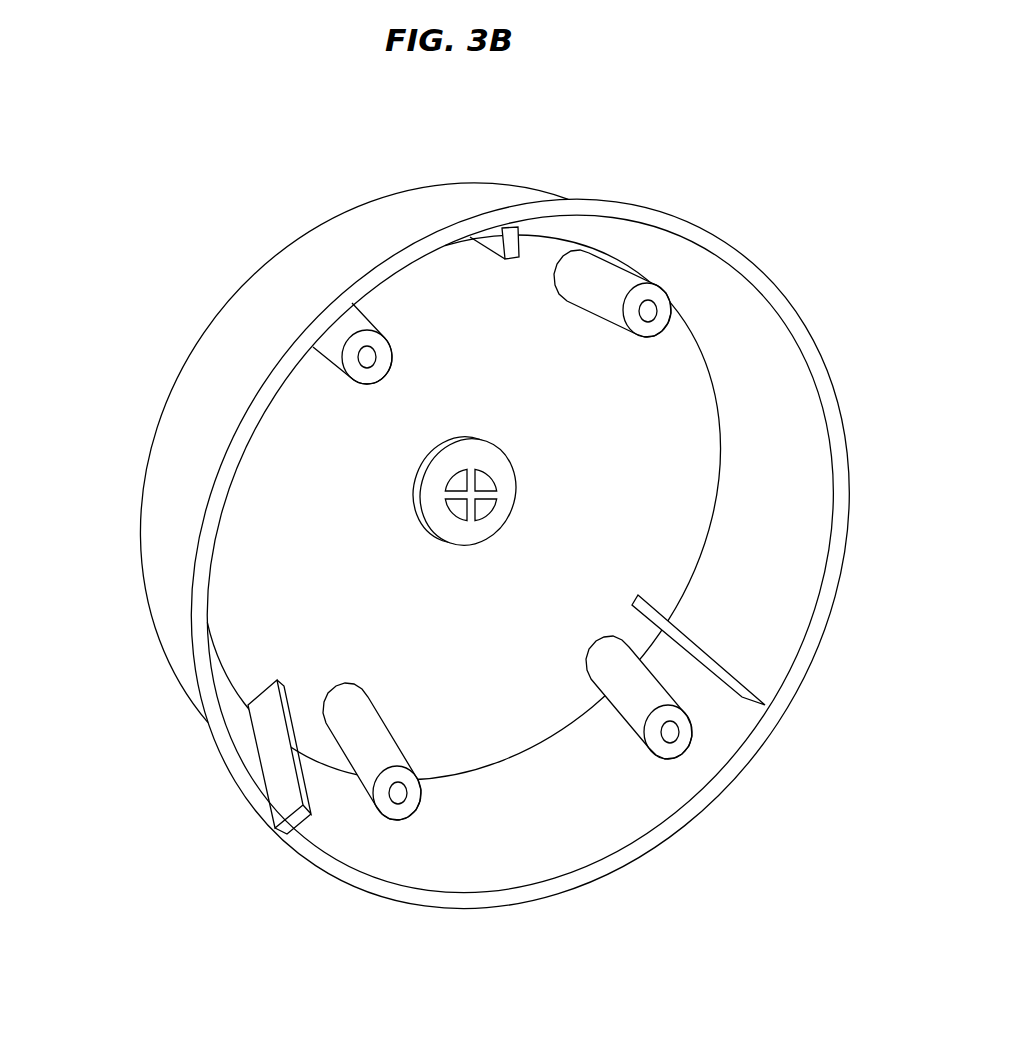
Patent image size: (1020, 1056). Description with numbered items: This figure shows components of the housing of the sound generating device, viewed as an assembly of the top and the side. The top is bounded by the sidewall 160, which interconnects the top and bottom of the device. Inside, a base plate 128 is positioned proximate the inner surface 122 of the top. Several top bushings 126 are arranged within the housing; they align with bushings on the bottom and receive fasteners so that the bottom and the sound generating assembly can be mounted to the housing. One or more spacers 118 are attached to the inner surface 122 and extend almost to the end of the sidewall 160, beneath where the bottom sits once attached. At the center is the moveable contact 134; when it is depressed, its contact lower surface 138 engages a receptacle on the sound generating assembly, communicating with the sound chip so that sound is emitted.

The spacer 118 is at (250, 743).
The inner surface 122 is at (213, 680).
The top bushing 126 is at (343, 350).
The base plate 128 is at (327, 428).
The contact 134 is at (458, 482).
The contact lower surface 138 is at (500, 473).
The sidewall 160 is at (190, 580).